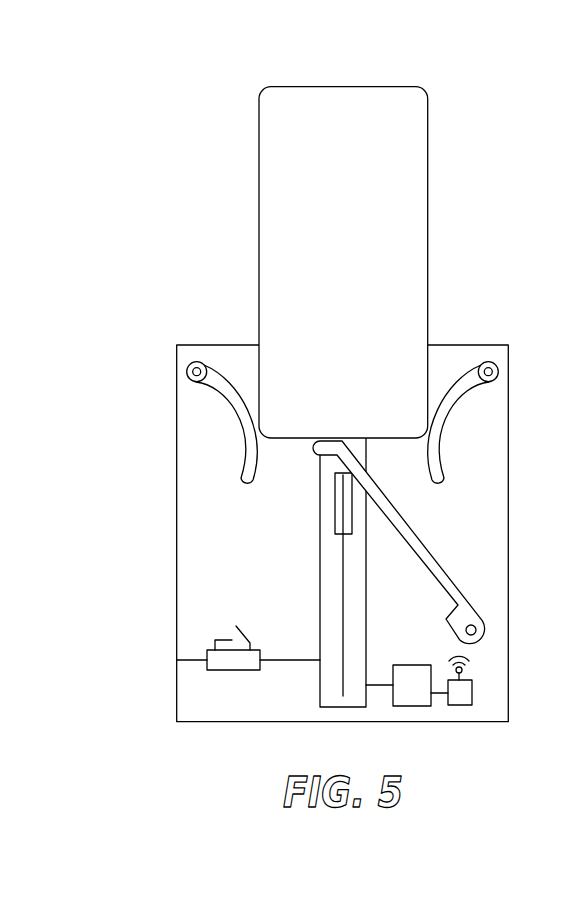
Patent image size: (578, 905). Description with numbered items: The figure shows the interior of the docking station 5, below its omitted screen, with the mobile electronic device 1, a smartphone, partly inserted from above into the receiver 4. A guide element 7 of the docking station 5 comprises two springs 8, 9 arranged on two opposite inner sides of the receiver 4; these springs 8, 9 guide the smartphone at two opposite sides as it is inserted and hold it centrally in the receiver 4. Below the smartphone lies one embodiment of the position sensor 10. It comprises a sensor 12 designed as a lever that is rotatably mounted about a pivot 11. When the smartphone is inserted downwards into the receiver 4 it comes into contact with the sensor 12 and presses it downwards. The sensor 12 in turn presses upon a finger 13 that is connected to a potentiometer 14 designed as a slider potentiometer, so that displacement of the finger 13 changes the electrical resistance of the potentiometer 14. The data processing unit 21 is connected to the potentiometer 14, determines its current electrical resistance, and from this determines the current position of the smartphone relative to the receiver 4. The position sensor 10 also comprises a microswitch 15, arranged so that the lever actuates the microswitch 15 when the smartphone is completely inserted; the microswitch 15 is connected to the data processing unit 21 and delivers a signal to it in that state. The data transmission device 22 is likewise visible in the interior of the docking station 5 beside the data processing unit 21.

The mobile electronic device 1 is at (387, 86).
The receiver 4 is at (468, 345).
The docking station 5 is at (133, 539).
The guide element 7 is at (235, 408).
The spring 8 is at (189, 366).
The spring 9 is at (496, 366).
The position sensor 10 is at (342, 658).
The pivot 11 is at (477, 627).
The sensor 12 is at (443, 567).
The finger 13 is at (335, 508).
The potentiometer 14 is at (353, 693).
The microswitch 15 is at (177, 660).
The data processing unit 21 is at (417, 706).
The data transmission device 22 is at (473, 695).